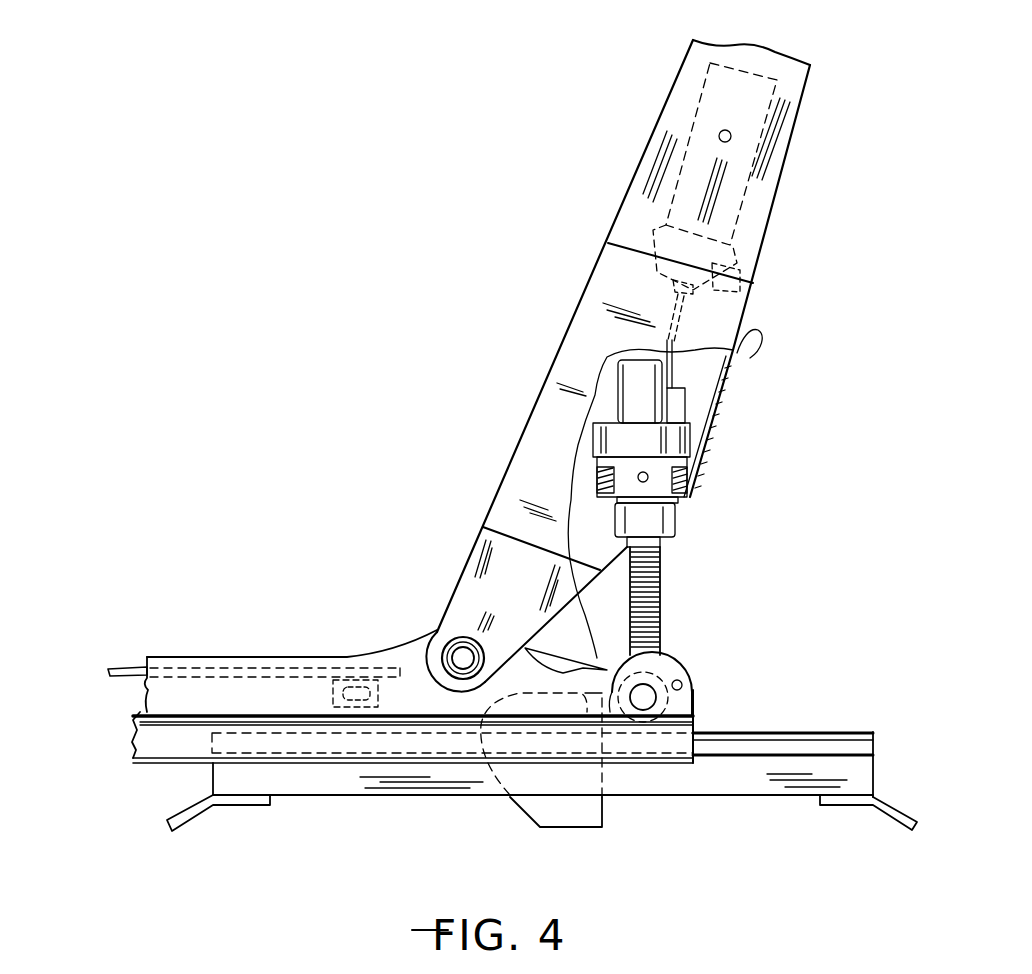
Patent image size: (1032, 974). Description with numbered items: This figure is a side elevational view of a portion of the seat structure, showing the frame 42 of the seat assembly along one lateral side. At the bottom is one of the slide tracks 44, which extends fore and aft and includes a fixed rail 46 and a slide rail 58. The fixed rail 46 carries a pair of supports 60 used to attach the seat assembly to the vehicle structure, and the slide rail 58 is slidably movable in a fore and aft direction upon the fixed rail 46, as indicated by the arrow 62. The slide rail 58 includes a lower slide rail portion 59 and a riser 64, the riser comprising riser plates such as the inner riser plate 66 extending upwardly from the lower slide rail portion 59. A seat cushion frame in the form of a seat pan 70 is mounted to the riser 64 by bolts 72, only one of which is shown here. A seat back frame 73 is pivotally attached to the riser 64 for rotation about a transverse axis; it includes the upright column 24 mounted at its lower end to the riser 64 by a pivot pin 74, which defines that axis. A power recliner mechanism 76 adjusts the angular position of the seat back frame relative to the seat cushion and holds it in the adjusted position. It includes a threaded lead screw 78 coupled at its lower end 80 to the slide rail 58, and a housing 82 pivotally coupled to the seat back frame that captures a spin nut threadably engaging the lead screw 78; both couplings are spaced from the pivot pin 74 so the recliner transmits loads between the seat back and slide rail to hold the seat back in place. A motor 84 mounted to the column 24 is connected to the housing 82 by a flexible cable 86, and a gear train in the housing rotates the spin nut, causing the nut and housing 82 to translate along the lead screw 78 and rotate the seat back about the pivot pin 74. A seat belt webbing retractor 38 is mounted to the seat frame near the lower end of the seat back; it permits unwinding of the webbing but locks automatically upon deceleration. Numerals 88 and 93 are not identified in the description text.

The upright column 24 is at (642, 157).
The seat back frame 73 is at (792, 156).
The motor 84 is at (745, 207).
The flexible cable 86 is at (690, 335).
The housing 82 is at (690, 438).
The power recliner mechanism 76 is at (704, 513).
The threaded lead screw 78 is at (662, 583).
The lower end of lead screw 80 is at (677, 667).
The pivot opening 93 is at (687, 670).
The frame 42 is at (418, 522).
The pivot pin 74 is at (455, 637).
The pivoting direction 88 is at (515, 624).
The riser 64 is at (226, 650).
The inner riser plate 66 is at (308, 657).
The seat pan 70 is at (123, 667).
The bolt 72 is at (333, 700).
The slide rail 58 is at (704, 720).
The slide track 44 is at (790, 722).
The fixed rail 46 is at (767, 780).
The support 60 is at (203, 807).
The lower slide rail portion 59 is at (162, 747).
The arrow 62 is at (122, 735).
The seat belt webbing retractor 38 is at (585, 828).